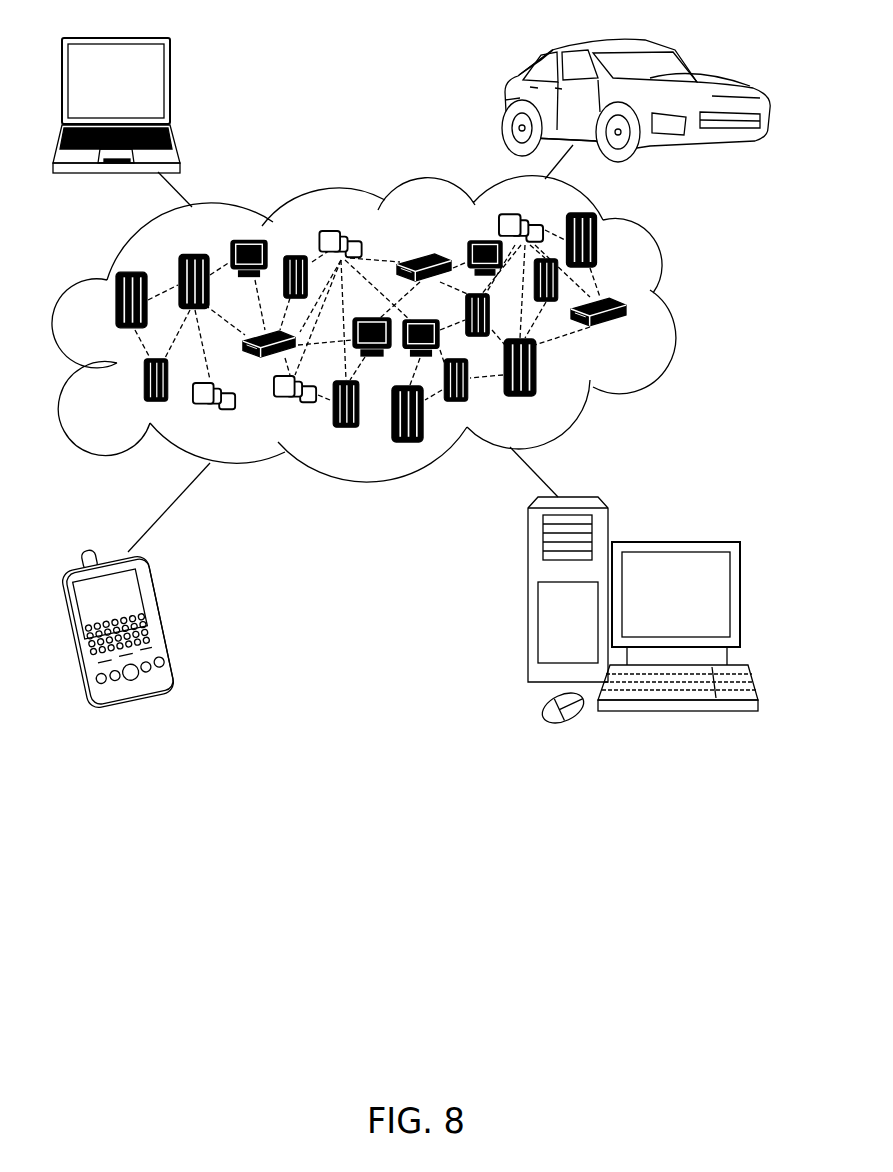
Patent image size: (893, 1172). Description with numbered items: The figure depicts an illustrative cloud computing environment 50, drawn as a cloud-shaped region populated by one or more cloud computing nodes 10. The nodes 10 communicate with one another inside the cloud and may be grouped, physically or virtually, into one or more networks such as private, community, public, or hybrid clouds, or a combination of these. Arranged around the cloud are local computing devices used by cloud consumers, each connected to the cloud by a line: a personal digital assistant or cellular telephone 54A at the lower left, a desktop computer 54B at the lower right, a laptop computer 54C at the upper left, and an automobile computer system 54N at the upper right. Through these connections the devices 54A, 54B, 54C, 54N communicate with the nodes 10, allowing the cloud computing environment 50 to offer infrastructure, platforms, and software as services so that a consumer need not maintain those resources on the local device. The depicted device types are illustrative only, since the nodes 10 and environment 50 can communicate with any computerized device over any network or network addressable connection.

The cloud computing nodes 10 is at (630, 333).
The cloud computing environment 50 is at (633, 305).
The personal digital assistant or cellular telephone 54A is at (167, 618).
The desktop computer 54B is at (673, 542).
The laptop computer 54C is at (170, 88).
The automobile computer system 54N is at (504, 100).